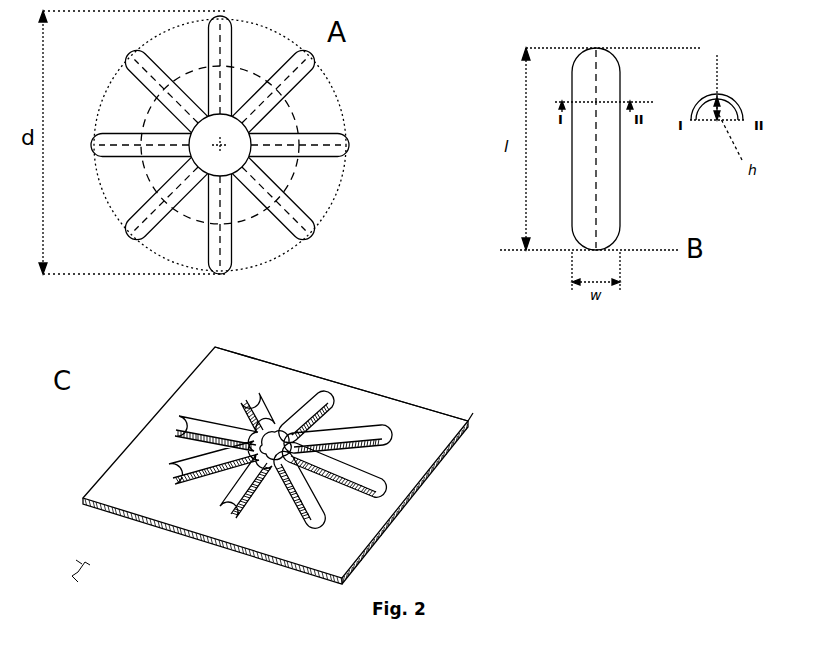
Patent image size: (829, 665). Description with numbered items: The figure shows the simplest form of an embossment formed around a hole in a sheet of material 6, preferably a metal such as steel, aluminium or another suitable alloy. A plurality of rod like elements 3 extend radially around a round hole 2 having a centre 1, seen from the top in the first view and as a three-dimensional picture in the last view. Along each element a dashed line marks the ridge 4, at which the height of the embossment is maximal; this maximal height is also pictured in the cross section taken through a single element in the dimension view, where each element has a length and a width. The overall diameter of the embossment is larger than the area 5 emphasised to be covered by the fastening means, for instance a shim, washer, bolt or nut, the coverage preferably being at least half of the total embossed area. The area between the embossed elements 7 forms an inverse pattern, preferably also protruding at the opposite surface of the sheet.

In FIG. 2A, the centre 1 is at (222, 145).
In FIG. 2A, the round hole 2 is at (213, 160).
In FIG. 2C, the round hole 2 is at (268, 452).
In FIG. 2A, the rod like elements 3 is at (300, 240).
In FIG. 2B, the rod like elements 3 is at (607, 167).
In FIG. 2C, the rod like elements 3 is at (297, 520).
In FIG. 2A, the ridge 4 is at (308, 70).
In FIG. 2B, the ridge 4 is at (600, 72).
In FIG. 2C, the ridge 4 is at (317, 497).
In FIG. 2A, the area 5 is at (297, 173).
In FIG. 2C, the sheet of material 6 is at (373, 547).
In FIG. 2C, the area between the embossed elements 7 is at (335, 427).